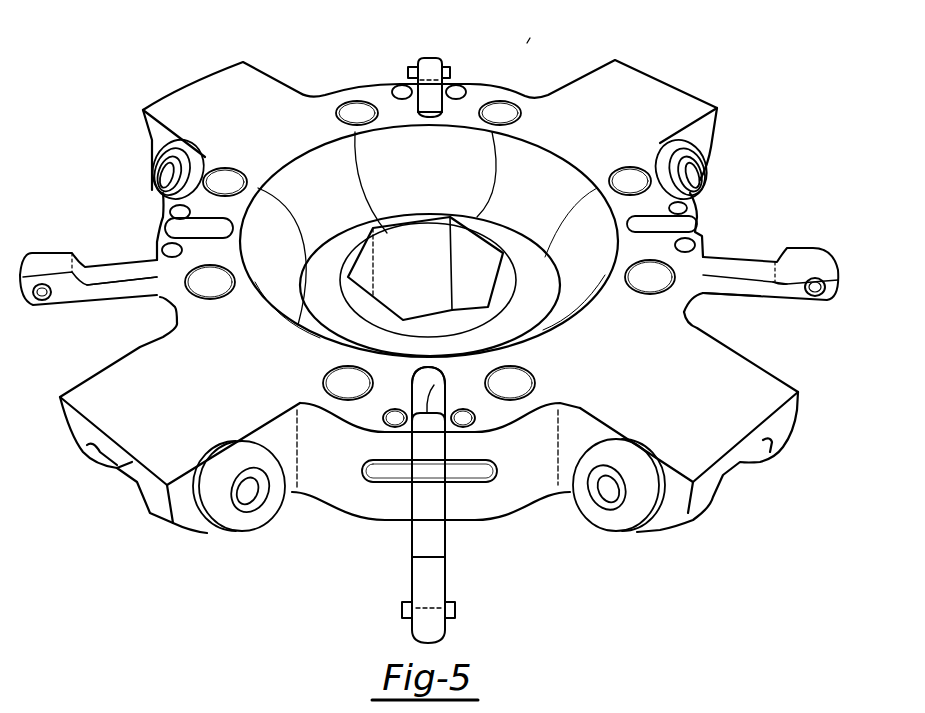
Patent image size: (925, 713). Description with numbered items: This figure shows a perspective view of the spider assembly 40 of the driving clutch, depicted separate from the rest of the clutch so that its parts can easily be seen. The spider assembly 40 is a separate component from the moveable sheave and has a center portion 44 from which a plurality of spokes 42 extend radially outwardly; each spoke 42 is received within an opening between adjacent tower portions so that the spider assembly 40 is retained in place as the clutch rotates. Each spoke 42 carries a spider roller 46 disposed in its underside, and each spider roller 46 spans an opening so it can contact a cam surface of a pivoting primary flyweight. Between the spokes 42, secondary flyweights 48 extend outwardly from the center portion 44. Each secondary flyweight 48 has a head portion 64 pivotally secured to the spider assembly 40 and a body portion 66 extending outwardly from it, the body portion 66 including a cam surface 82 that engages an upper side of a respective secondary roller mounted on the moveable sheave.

The spider assembly 40 is at (525, 47).
The spokes 42 is at (649, 89).
The center portion 44 is at (428, 242).
The spider roller 46 is at (165, 170).
The secondary flyweights 48 is at (425, 66).
The head portion 64 is at (440, 373).
The body portion 66 is at (110, 292).
The cam surface 82 is at (768, 300).